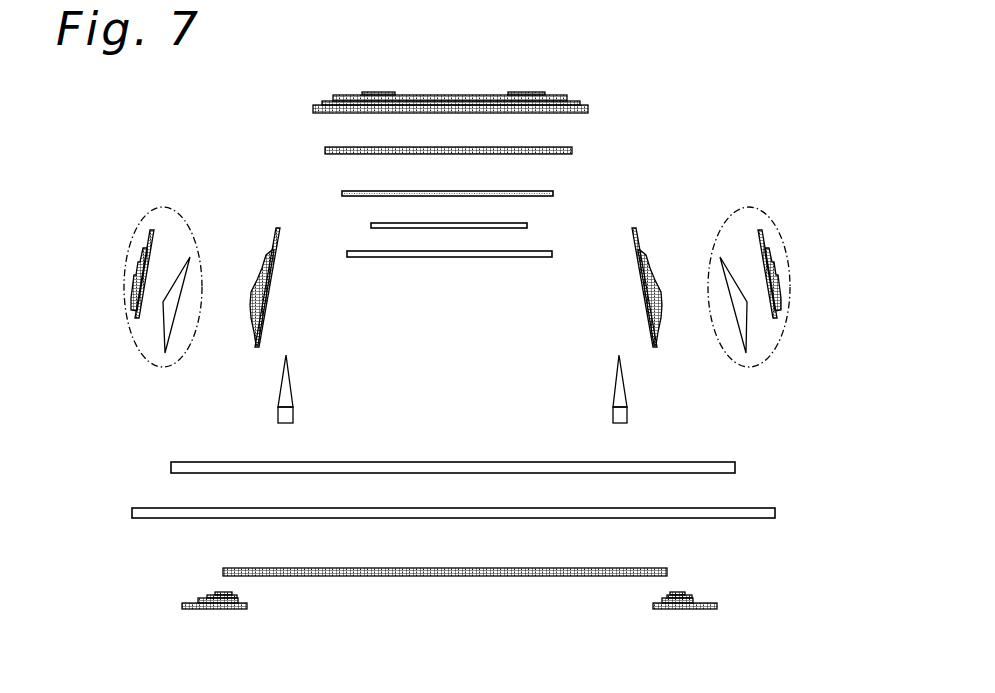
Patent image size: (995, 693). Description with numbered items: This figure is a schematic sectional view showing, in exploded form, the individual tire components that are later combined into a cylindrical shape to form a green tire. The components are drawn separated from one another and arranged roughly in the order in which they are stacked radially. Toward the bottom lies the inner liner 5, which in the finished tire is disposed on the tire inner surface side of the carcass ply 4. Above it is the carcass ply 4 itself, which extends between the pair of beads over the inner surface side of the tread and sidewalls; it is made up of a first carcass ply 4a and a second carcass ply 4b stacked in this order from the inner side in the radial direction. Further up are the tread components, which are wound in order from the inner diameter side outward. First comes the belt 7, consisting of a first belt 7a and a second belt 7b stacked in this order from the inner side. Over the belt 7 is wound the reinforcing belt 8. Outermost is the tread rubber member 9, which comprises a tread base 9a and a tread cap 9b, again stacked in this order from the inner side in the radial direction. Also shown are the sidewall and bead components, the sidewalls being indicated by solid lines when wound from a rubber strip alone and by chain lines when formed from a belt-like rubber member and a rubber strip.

The carcass ply 4 is at (829, 455).
The first carcass ply 4a is at (775, 512).
The second carcass ply 4b is at (735, 467).
The inner liner 5 is at (398, 576).
The belt 7 is at (478, 303).
The first belt 7a is at (431, 257).
The second belt 7b is at (462, 228).
The reinforcing belt 8 is at (361, 191).
The tread rubber member 9 is at (245, 100).
The tread base 9a is at (331, 147).
The tread cap 9b is at (334, 97).